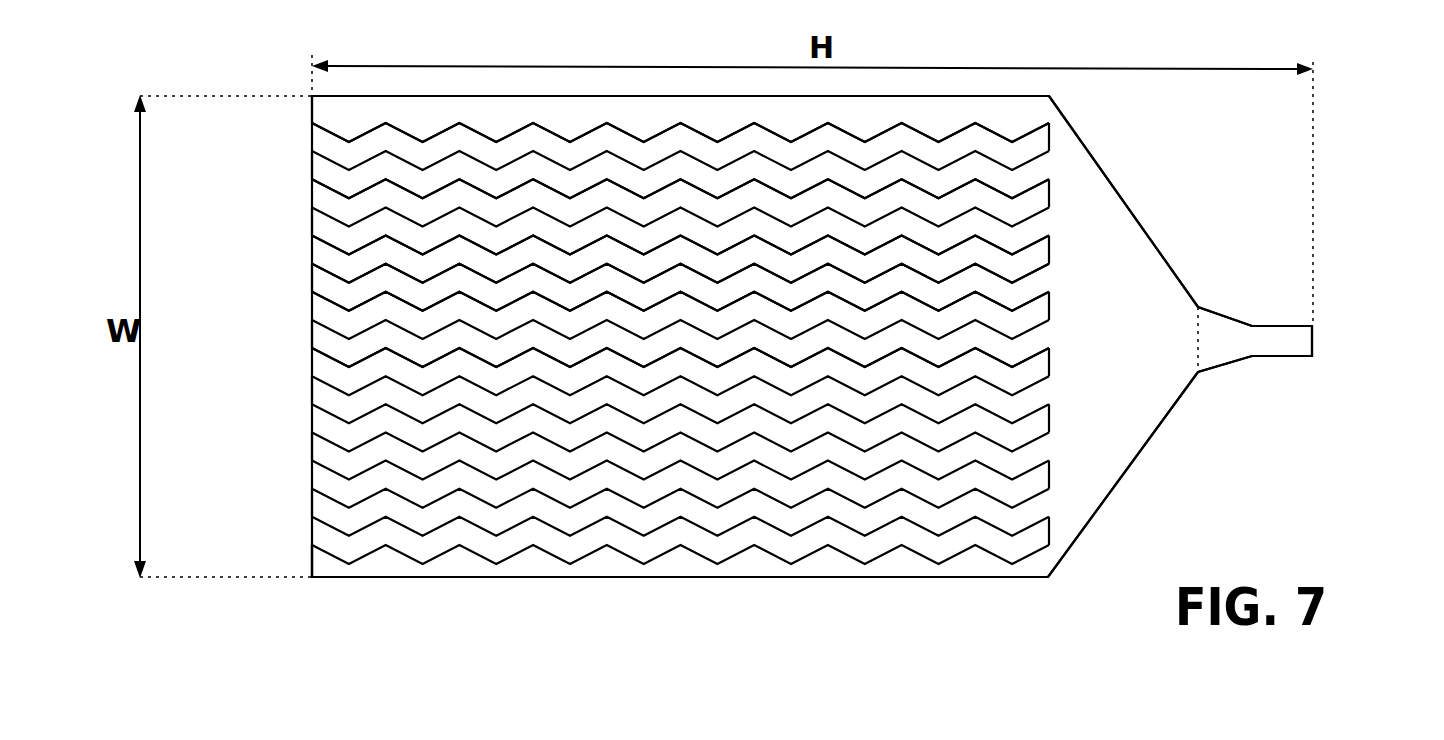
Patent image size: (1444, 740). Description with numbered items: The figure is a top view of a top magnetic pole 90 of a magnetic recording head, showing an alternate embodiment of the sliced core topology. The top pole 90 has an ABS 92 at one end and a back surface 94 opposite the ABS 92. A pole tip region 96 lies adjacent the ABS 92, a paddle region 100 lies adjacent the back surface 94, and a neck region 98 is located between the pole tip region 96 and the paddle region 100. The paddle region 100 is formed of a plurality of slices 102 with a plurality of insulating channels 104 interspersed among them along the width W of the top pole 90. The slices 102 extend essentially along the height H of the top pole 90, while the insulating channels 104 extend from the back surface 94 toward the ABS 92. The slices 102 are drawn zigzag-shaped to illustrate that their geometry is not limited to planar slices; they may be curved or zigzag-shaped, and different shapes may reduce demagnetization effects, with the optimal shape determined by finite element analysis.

The top magnetic pole 90 is at (1352, 106).
The ABS 92 is at (1312, 341).
The back surface 94 is at (312, 561).
The pole tip region 96 is at (1242, 352).
The neck region 98 is at (1166, 352).
The paddle region 100 is at (968, 131).
The slices 102 is at (322, 230).
The insulating channels 104 is at (322, 373).